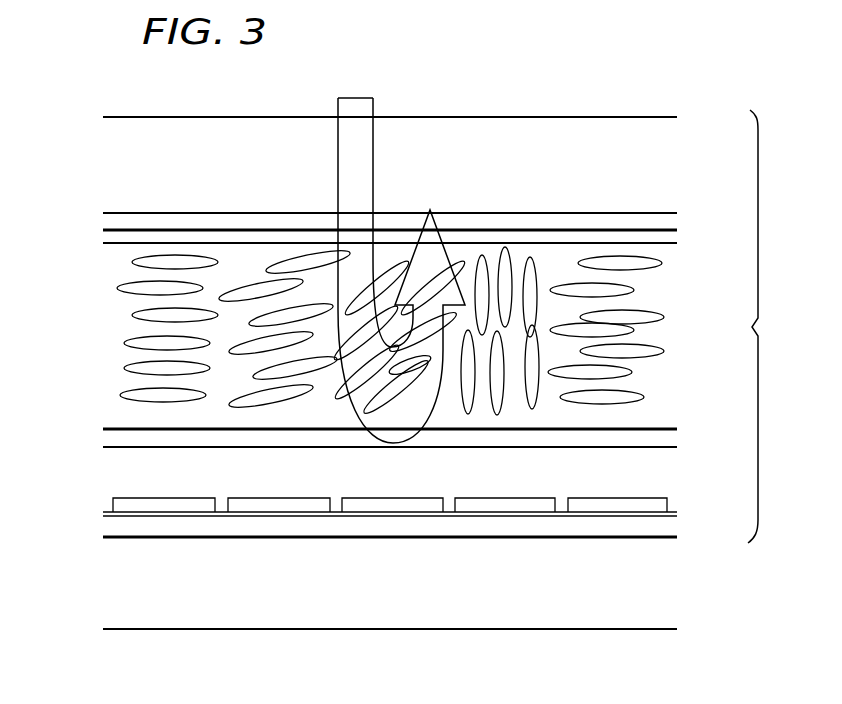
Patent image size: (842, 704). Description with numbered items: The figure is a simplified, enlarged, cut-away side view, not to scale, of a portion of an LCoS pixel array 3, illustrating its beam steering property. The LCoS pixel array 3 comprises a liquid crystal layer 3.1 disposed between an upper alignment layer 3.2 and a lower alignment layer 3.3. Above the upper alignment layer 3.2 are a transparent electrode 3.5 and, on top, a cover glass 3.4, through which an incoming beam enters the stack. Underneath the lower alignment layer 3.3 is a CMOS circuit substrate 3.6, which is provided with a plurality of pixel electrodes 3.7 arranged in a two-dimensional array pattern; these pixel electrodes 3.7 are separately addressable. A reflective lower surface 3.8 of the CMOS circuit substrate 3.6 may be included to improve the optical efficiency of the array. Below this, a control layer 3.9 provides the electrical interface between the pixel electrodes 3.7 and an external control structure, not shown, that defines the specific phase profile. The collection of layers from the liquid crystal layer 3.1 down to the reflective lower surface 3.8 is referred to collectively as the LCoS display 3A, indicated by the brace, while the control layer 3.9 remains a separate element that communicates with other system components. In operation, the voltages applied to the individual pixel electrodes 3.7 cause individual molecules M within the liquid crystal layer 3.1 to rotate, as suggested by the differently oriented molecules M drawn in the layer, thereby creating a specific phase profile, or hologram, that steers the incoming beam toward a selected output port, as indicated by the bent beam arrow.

The LCoS pixel array 3 is at (598, 81).
The cover glass 3.4 is at (668, 170).
The transparent electrode 3.5 is at (668, 221).
The alignment layer 3.2 is at (668, 236).
The liquid crystal layer 3.1 is at (390, 332).
The molecules M is at (125, 288).
The alignment layer 3.3 is at (668, 440).
The CMOS circuit substrate 3.6 is at (668, 478).
The pixel electrodes 3.7 is at (113, 499).
The reflective lower surface 3.8 is at (592, 528).
The control layer 3.9 is at (505, 563).
The LCoS display 3A is at (772, 326).